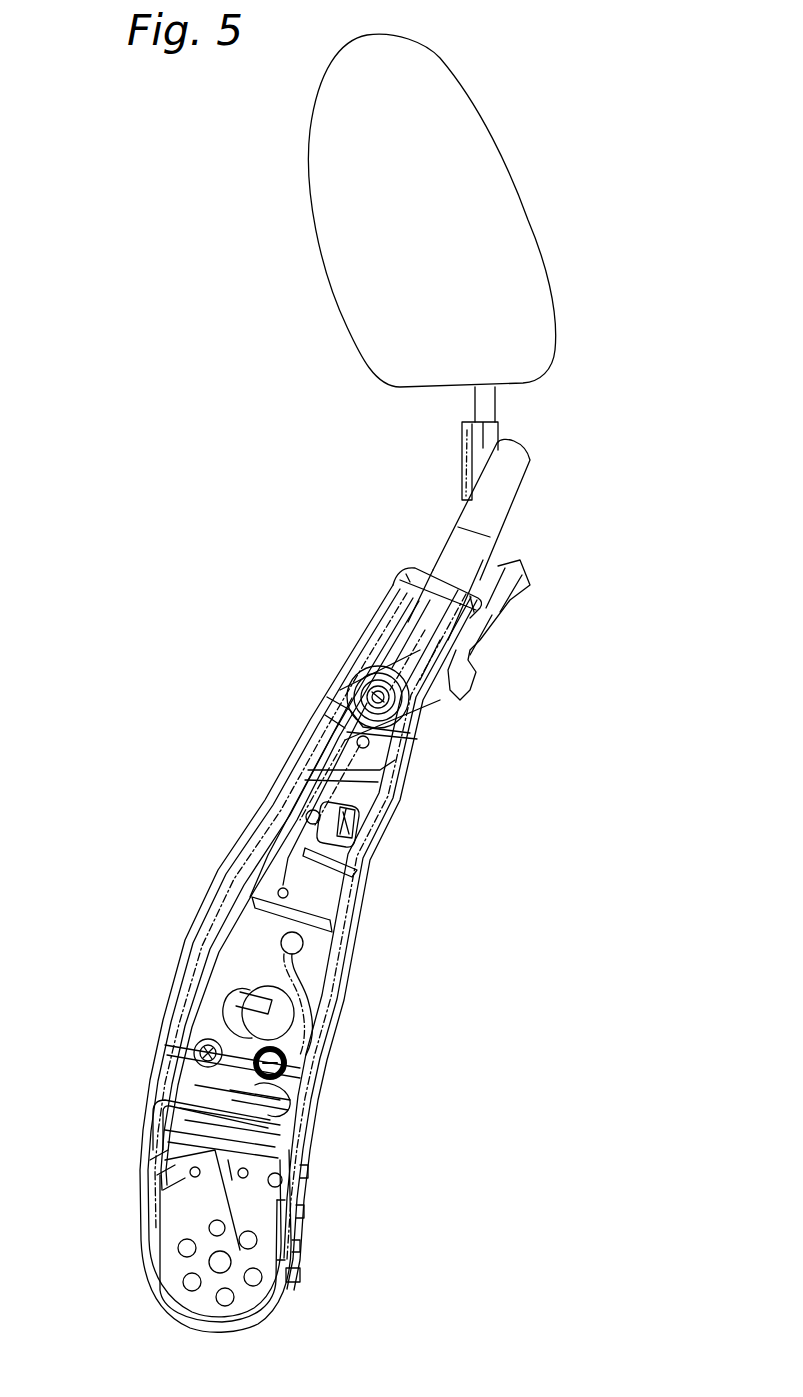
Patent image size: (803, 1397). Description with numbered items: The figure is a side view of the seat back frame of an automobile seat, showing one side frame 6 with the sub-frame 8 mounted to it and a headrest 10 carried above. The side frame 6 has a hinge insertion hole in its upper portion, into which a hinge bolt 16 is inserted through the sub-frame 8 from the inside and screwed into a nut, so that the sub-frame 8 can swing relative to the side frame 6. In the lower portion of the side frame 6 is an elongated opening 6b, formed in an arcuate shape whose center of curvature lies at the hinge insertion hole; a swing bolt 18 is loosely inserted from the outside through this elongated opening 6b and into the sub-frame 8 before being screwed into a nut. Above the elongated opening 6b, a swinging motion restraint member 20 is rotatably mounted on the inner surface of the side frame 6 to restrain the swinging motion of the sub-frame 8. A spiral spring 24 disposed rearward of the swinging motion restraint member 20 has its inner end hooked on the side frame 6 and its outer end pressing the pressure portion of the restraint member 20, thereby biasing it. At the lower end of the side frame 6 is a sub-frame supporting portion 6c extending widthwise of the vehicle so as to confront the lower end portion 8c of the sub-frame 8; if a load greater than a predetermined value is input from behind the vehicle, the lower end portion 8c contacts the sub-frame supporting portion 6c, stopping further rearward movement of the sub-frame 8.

The headrest 10 is at (540, 257).
The sub-frame 8 is at (513, 497).
The hinge bolt 16 is at (405, 722).
The side frame 6 is at (309, 946).
The spiral spring 24 is at (290, 1065).
The swing bolt 18 is at (278, 1110).
The swinging motion restraint member 20 is at (195, 1058).
The elongated opening 6b is at (185, 1099).
The sub-frame supporting portion 6c is at (270, 1254).
The lower end portion of the sub-frame 8c is at (285, 1273).